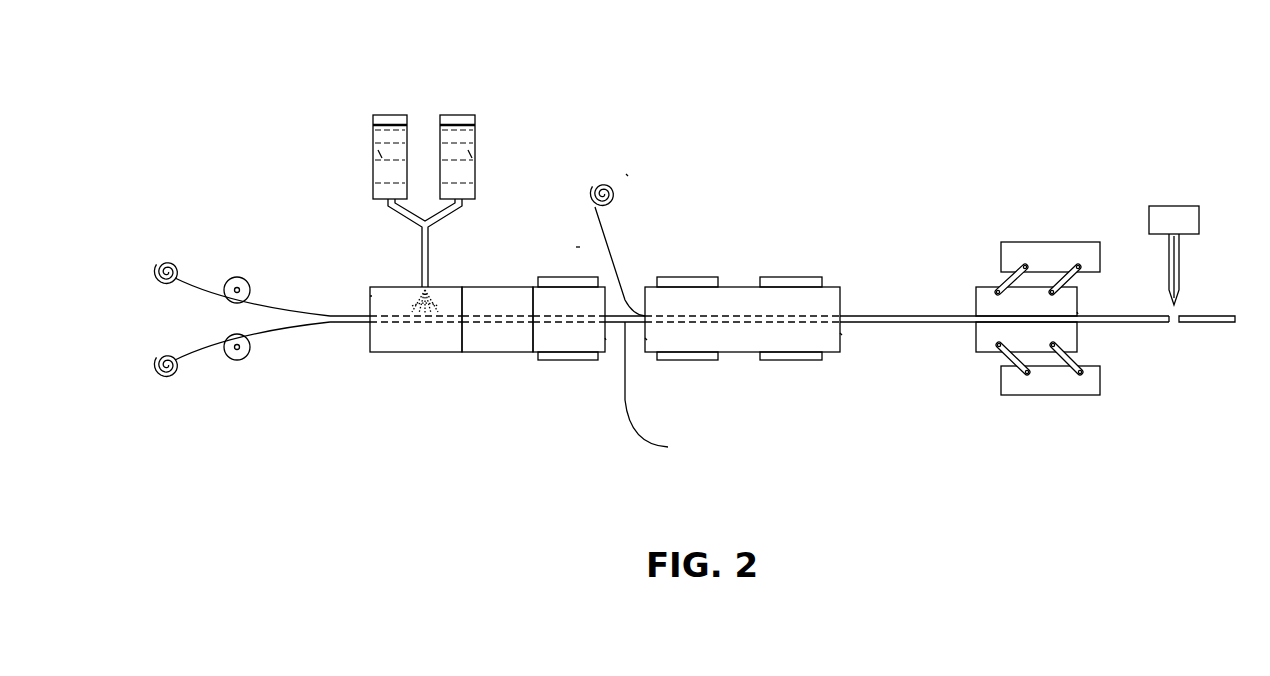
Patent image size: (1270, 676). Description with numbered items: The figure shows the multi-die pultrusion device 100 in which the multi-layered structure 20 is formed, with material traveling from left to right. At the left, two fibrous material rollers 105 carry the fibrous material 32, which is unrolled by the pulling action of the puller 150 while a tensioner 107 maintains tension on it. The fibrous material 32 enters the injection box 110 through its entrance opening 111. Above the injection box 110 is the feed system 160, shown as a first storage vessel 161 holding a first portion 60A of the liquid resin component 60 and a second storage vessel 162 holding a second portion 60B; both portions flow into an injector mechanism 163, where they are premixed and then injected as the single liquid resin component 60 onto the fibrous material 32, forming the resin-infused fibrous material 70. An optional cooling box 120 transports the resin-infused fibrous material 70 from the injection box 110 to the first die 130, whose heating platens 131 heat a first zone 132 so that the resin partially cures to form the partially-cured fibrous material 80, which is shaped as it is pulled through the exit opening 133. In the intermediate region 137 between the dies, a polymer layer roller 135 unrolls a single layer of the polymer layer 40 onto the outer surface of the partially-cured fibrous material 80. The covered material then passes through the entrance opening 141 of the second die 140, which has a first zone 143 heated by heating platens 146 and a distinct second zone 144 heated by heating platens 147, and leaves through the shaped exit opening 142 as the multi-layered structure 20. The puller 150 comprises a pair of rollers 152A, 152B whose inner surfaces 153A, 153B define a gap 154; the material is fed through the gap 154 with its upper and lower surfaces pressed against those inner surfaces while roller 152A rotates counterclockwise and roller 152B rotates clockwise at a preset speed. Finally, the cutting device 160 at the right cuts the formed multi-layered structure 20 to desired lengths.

The multi-die pultrusion device 100 is at (860, 73).
The multi-layered structure 20 is at (905, 315).
The fibrous material 32 is at (283, 300).
The polymer layer 40 is at (606, 237).
The liquid resin component 60 is at (418, 293).
The first portion of the liquid resin component 60A is at (380, 155).
The second portion of the liquid resin component 60B is at (470, 153).
The resin-infused fibrous material 70 is at (437, 320).
The partially-cured fibrous material 80 is at (673, 389).
The fibrous material roller 105 is at (170, 259).
The tensioner 107 is at (250, 285).
The injection box 110 is at (370, 342).
The entrance opening 111 is at (370, 296).
The cooling box 120 is at (490, 287).
The first die 130 is at (550, 375).
The heating platens 131 is at (568, 277).
The first zone 132 is at (577, 246).
The exit opening 133 is at (606, 340).
The polymer layer roller 135 is at (603, 181).
The intermediate region 137 is at (629, 172).
The second die 140 is at (795, 200).
The entrance opening 141 is at (646, 340).
The exit opening 142 is at (841, 335).
The first zone 143 is at (709, 306).
The second zone 144 is at (810, 306).
The heating platens 146 is at (690, 277).
The heating platens 147 is at (790, 277).
The puller 150 is at (1034, 271).
The roller 152A is at (1008, 311).
The roller 152B is at (1008, 344).
The inner surface 153A is at (990, 311).
The inner surface 153B is at (997, 326).
The gap 154 is at (1083, 314).
The feed system / cutting device 160 is at (772, 172).
The first storage vessel 161 is at (391, 113).
The second storage vessel 162 is at (460, 112).
The injector mechanism 163 is at (428, 240).